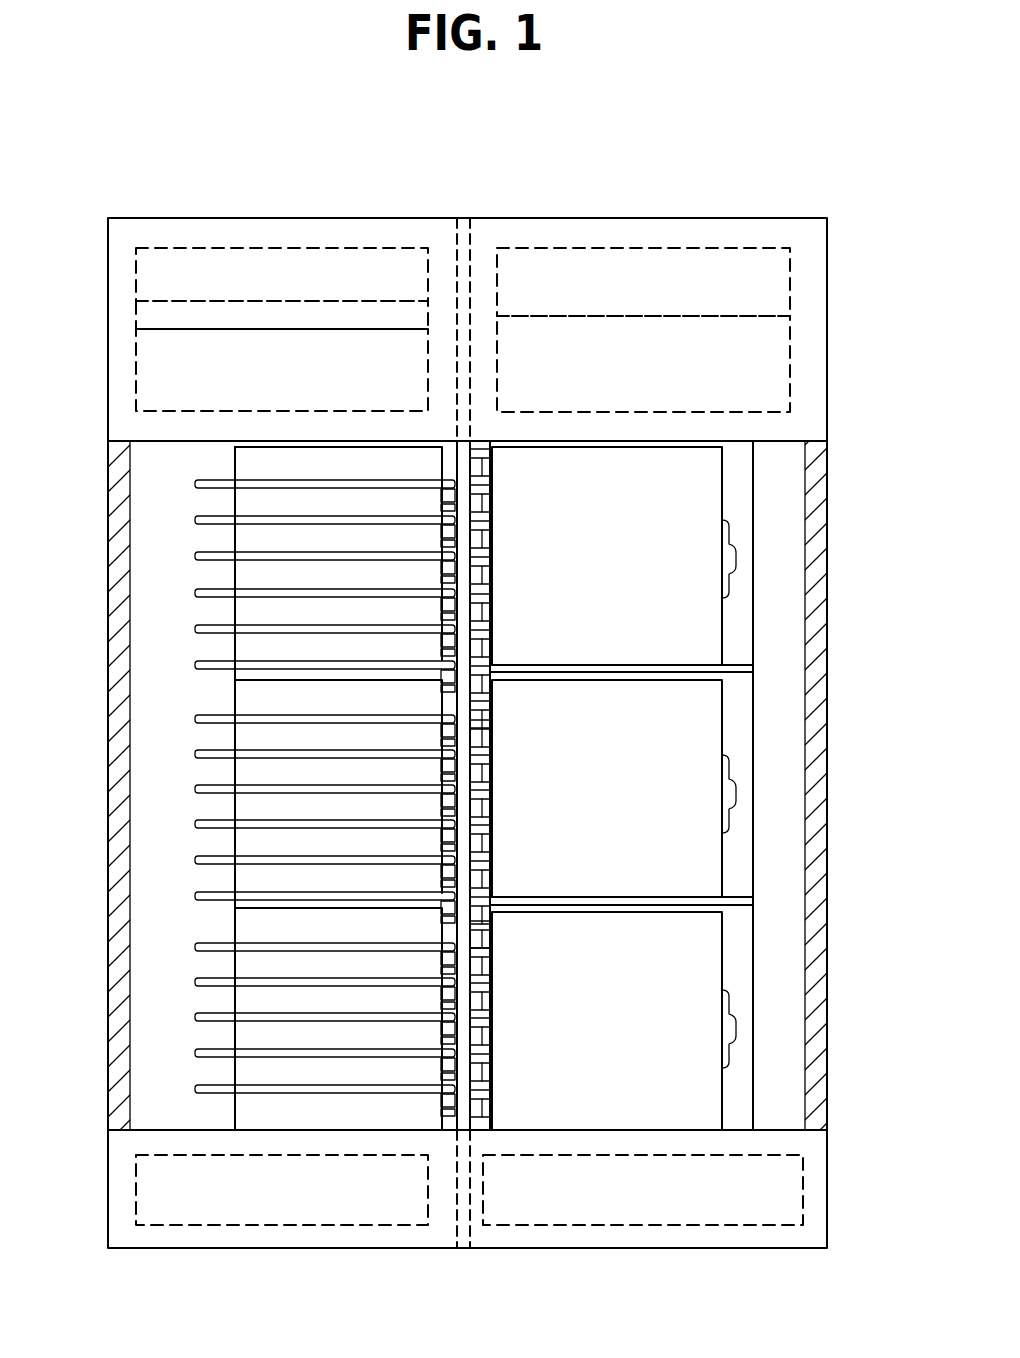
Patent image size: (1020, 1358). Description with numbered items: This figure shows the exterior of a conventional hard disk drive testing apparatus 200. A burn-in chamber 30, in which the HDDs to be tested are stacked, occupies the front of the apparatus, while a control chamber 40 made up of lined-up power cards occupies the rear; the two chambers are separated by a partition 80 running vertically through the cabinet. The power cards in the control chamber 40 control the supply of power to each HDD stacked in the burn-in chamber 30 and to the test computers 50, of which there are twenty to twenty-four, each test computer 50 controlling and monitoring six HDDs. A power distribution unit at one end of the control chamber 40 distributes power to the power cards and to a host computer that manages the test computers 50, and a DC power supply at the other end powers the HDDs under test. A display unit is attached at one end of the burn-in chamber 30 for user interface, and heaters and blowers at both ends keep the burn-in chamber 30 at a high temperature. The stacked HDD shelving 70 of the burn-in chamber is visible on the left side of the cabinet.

The HDD testing apparatus 200 is at (790, 170).
The burn-in chamber 30 is at (150, 891).
The control chamber 40 is at (747, 945).
The test computer 50 is at (708, 708).
The wafer boat shelf 70 is at (235, 688).
The partition 80 is at (463, 1120).